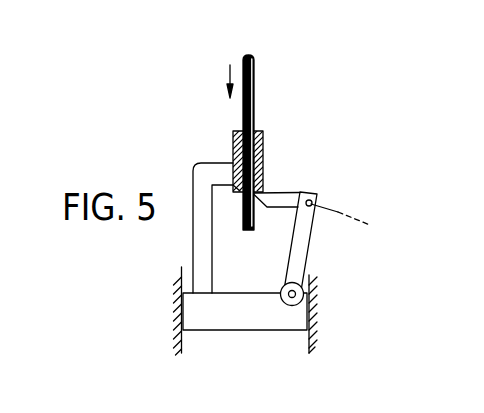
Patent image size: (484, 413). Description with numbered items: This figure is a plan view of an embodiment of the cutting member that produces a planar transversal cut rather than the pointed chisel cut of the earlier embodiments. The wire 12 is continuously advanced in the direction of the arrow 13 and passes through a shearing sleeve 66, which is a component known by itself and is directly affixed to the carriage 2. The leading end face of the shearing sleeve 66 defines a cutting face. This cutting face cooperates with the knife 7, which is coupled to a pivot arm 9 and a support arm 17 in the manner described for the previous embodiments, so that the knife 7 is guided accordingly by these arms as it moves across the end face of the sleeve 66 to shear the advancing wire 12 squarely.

The carriage 2 is at (233, 305).
The knife 7 is at (276, 208).
The pivot arm 9 is at (308, 247).
The wire 12 is at (254, 107).
The arrow 13 is at (230, 72).
The support arm 17 is at (336, 211).
The shearing sleeve 66 is at (263, 157).